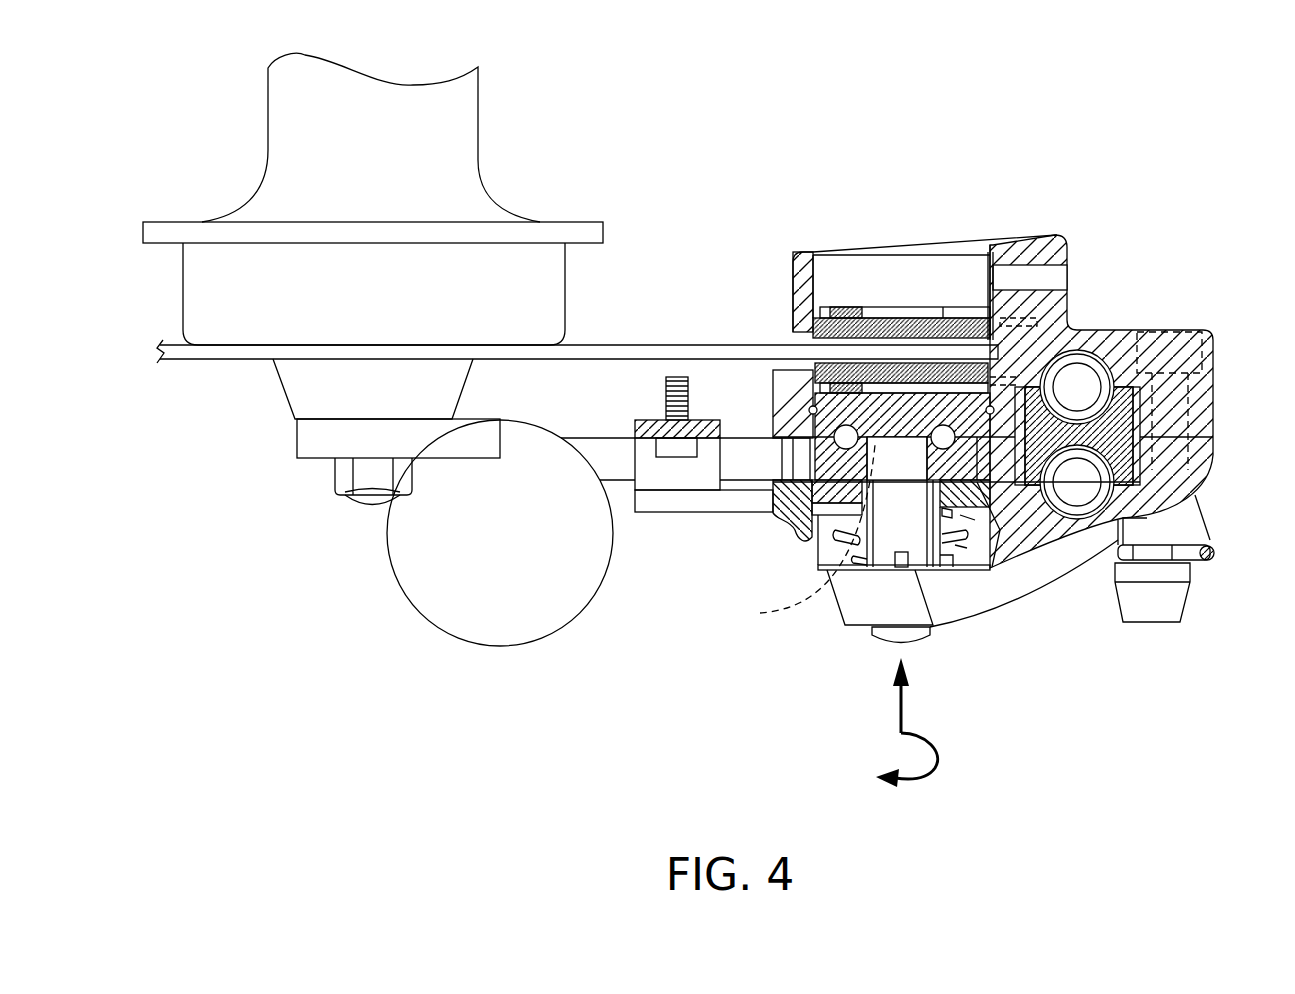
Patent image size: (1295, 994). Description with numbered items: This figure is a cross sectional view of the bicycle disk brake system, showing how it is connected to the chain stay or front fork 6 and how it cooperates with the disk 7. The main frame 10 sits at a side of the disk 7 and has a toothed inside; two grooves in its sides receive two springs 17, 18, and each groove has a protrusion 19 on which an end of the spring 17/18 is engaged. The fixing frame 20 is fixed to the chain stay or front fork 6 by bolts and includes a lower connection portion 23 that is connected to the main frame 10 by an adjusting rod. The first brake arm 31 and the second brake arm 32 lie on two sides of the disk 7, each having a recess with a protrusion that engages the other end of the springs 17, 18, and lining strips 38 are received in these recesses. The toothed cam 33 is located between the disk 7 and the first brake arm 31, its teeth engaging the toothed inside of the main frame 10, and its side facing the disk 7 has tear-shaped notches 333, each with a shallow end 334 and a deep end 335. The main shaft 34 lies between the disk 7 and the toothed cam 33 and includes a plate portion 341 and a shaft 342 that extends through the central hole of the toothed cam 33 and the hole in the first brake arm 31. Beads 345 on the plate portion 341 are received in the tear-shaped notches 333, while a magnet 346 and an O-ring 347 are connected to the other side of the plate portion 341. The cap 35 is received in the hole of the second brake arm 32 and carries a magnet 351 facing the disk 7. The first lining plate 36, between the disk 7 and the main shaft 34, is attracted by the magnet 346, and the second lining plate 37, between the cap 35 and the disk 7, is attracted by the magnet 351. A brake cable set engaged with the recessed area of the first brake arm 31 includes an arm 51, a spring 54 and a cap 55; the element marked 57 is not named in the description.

The chain stay or front fork 6 is at (293, 130).
The disk 7 is at (237, 352).
The main frame 10 is at (1113, 432).
The spring 17 is at (1045, 555).
The spring 18 is at (1060, 368).
The protrusion 19 is at (1073, 383).
The fixing frame 20 is at (648, 463).
The lower connection portion 23 is at (677, 502).
The first brake arm 31 is at (1215, 362).
The second brake arm 32 is at (1210, 460).
The toothed cam 33 is at (815, 483).
The main shaft 34 is at (1057, 688).
The cap 35 is at (838, 277).
The first lining plate 36 is at (830, 373).
The second lining plate 37 is at (955, 325).
The lining strips 38 is at (1162, 432).
The arm 51 is at (1082, 573).
The spring 54 is at (975, 515).
The cap 55 is at (960, 570).
The brake pad 57 is at (882, 640).
The tear-shaped notches 333 is at (794, 538).
The shallow end 334 is at (890, 440).
The deep end 335 is at (838, 478).
The plate portion 341 is at (1000, 497).
The shaft 342 is at (907, 457).
The beads 345 is at (840, 440).
The magnet 346 is at (808, 406).
The O-ring 347 is at (812, 410).
The magnet 351 is at (848, 312).